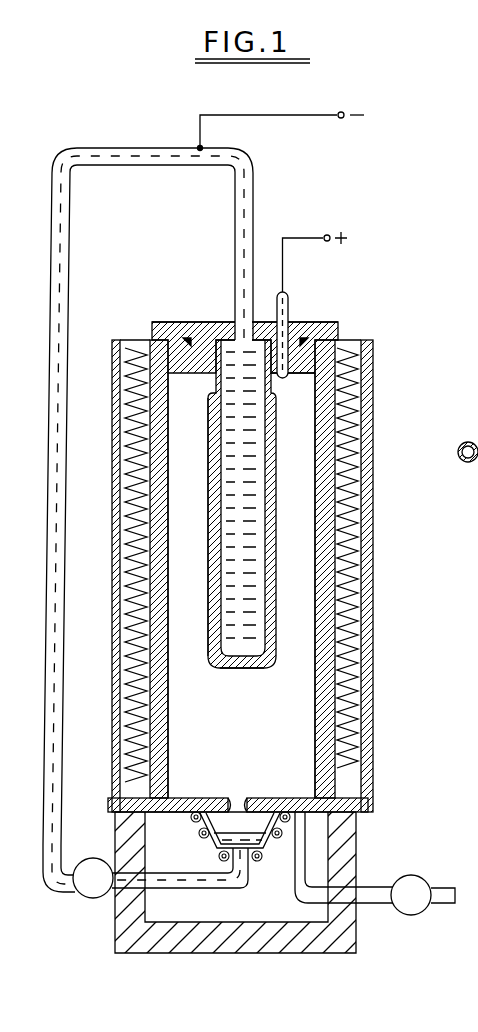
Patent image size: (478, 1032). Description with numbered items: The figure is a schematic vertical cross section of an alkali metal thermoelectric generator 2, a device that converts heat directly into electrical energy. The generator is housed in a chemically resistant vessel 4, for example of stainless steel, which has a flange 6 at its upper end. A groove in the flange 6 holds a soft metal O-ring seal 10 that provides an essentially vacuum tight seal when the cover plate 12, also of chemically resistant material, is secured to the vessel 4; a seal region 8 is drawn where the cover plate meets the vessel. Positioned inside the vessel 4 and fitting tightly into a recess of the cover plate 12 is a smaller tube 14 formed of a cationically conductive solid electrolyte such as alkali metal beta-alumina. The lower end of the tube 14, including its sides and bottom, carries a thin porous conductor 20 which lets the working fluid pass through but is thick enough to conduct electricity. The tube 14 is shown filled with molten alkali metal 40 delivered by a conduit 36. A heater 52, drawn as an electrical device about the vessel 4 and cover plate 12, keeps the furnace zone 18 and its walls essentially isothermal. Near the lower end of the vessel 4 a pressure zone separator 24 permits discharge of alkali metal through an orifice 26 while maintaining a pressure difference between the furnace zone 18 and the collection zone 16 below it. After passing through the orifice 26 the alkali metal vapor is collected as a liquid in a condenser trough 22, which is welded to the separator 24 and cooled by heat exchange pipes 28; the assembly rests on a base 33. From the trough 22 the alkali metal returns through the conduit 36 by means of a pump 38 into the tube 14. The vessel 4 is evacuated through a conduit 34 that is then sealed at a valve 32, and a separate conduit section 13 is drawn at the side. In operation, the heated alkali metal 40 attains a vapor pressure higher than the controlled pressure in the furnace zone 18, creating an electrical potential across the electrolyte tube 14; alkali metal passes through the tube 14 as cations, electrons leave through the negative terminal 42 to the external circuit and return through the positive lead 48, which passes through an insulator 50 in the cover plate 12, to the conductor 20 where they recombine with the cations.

The alkali metal thermoelectric generator 2 is at (147, 308).
The vessel 4 is at (320, 533).
The flange 6 is at (307, 360).
The seal 8 is at (152, 340).
The soft metal O-ring seal 10 is at (337, 331).
The cover plate 12 is at (158, 328).
The conduit section 13 is at (467, 441).
The smaller tube 14 is at (269, 584).
The collection zone 16 is at (262, 820).
The furnace zone 18 is at (294, 741).
The thin conductor 20 is at (243, 670).
The condenser trough 22 is at (215, 838).
The pressure zone separator 24 is at (270, 800).
The orifice 26 is at (238, 796).
The heat exchange pipes 28 is at (265, 862).
The valve 32 is at (392, 880).
The base 33 is at (288, 940).
The conduit 34 is at (373, 903).
The conduit 36 is at (128, 162).
The pump 38 is at (95, 900).
The molten alkali metal 40 is at (213, 640).
The negative terminal 42 is at (306, 111).
The positive lead 48 is at (316, 240).
The insulator 50 is at (290, 300).
The heater 52 is at (373, 640).